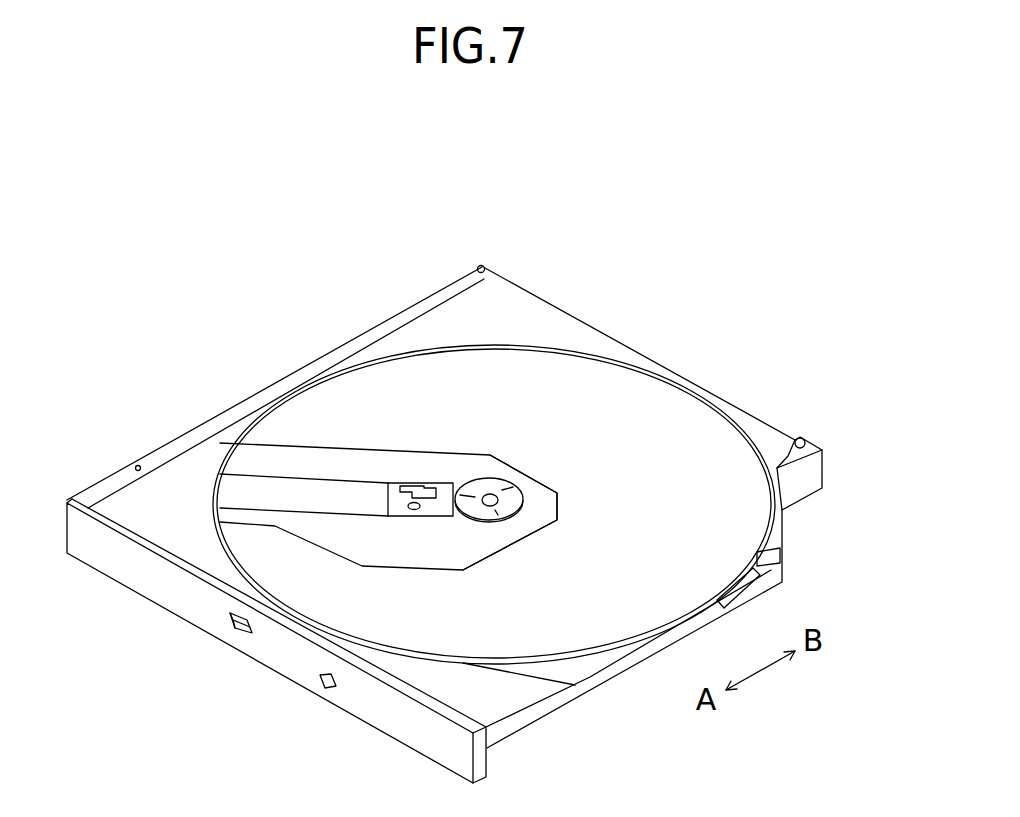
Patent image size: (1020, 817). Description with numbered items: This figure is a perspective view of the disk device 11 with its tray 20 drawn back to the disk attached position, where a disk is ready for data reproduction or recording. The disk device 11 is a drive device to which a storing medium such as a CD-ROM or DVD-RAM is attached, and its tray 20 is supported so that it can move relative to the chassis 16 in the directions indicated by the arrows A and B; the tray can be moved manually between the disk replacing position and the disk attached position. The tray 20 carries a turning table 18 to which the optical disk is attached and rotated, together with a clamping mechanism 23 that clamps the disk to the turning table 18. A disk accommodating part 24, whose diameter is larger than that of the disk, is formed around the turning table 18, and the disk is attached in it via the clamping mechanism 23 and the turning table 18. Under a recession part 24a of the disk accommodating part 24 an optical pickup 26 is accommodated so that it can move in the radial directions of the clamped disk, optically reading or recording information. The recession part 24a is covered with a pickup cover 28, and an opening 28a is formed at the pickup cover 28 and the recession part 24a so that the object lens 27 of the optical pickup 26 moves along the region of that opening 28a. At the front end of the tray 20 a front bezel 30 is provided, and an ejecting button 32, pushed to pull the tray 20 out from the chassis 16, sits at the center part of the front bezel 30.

The disk device 11 is at (548, 196).
The chassis 16 is at (822, 450).
The turning table 18 is at (523, 500).
The tray 20 is at (566, 711).
The clamping mechanism 23 is at (517, 485).
The disk accommodating part 24 is at (357, 385).
The recession part 24a is at (507, 460).
The optical pickup 26 is at (425, 485).
The object lens 27 is at (398, 508).
The pickup cover 28 is at (388, 479).
The opening 28a is at (333, 493).
The front bezel 30 is at (163, 592).
The ejecting button 32 is at (232, 632).